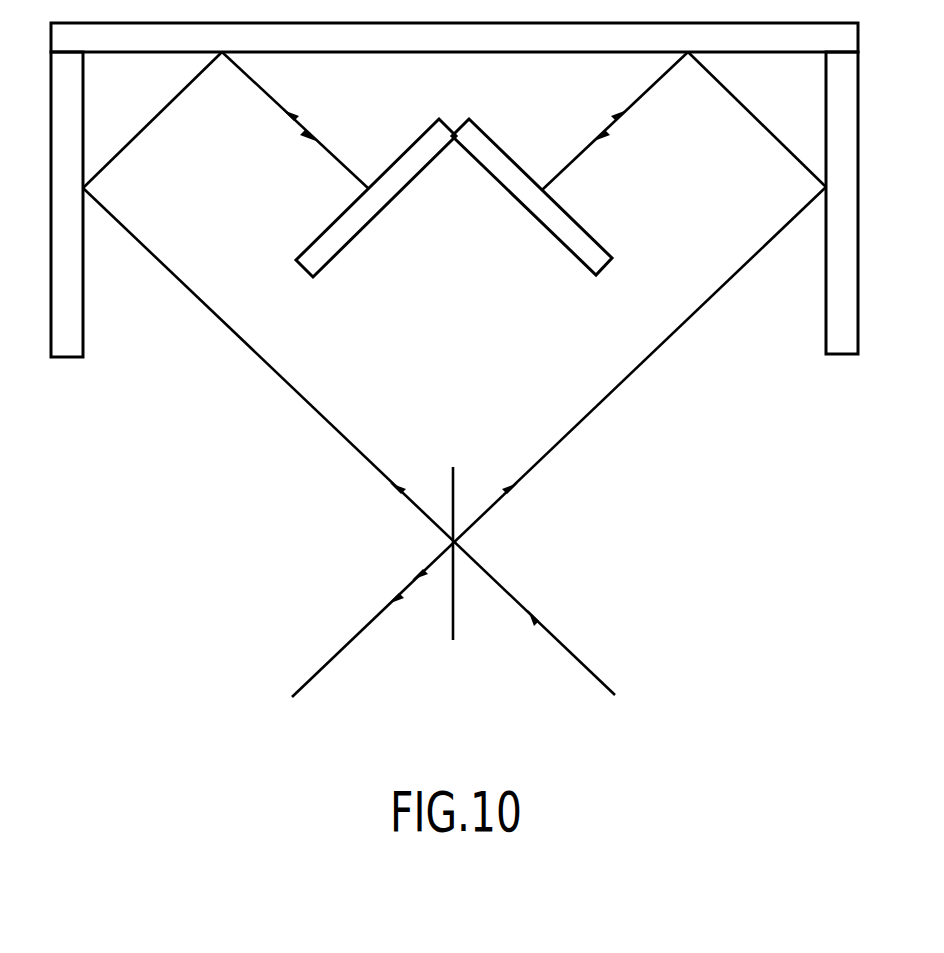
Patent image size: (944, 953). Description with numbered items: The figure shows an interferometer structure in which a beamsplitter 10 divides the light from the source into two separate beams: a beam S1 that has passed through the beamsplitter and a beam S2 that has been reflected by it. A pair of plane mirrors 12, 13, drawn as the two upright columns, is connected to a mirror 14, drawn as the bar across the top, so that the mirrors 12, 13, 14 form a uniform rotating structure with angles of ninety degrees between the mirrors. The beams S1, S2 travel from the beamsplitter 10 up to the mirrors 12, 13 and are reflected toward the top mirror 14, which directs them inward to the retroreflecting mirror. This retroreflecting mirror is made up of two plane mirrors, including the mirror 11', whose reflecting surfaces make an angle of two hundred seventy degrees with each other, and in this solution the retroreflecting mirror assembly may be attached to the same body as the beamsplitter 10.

The beamsplitter 10 is at (456, 483).
The plane mirror 11' is at (355, 198).
The mirror 12 is at (83, 318).
The mirror 13 is at (826, 310).
The mirror 14 is at (386, 52).
The light beam S1 is at (342, 430).
The light beam S2 is at (587, 415).